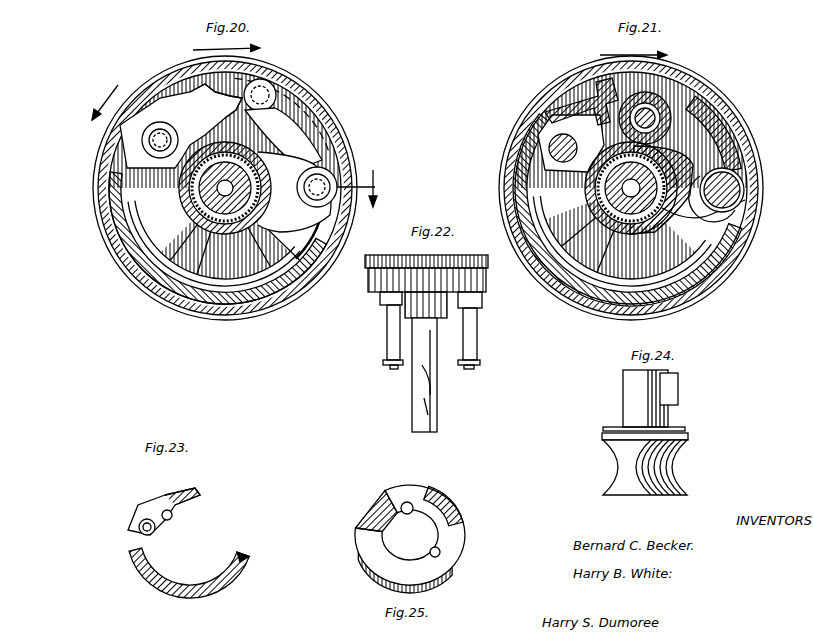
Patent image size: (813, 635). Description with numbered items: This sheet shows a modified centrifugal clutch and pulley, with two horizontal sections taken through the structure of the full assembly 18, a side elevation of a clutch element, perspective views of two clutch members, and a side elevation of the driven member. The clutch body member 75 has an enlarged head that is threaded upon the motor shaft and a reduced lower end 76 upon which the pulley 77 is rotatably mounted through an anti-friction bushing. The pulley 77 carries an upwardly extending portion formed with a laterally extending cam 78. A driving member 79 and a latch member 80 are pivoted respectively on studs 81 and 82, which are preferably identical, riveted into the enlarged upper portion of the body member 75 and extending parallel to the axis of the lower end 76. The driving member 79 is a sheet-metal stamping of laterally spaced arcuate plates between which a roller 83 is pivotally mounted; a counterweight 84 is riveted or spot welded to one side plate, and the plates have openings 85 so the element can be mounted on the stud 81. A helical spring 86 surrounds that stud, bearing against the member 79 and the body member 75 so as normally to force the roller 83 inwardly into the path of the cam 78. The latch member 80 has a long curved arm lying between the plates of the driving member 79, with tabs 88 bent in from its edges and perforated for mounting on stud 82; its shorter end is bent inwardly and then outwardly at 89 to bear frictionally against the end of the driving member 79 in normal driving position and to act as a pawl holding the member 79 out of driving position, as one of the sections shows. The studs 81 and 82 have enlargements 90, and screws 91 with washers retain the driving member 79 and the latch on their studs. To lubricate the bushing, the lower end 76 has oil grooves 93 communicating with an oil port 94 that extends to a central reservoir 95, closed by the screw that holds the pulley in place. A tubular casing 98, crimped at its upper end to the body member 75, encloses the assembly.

In FIG. 20, the section line reference 18 is at (237, 146).
In FIG. 22, the clutch body member 75 is at (370, 290).
In FIG. 21, the reduced lower end 76 is at (584, 193).
In FIG. 22, the reduced lower end 76 is at (412, 428).
In FIG. 24, the pulley 77 is at (614, 447).
In FIG. 20, the cam 78 is at (305, 170).
In FIG. 21, the cam 78 is at (687, 157).
In FIG. 24, the cam 78 is at (680, 386).
In FIG. 20, the driving member 79 is at (280, 152).
In FIG. 21, the driving member 79 is at (708, 137).
In FIG. 25, the driving member 79 is at (462, 520).
In FIG. 20, the latch member 80 is at (128, 230).
In FIG. 21, the latch member 80 is at (523, 180).
In FIG. 23, the latch member 80 is at (132, 570).
In FIG. 21, the stud 81 is at (740, 187).
In FIG. 22, the stud 81 is at (480, 347).
In FIG. 21, the stud 82 is at (558, 140).
In FIG. 22, the stud 82 is at (388, 347).
In FIG. 20, the roller 83 is at (275, 90).
In FIG. 21, the roller 83 is at (660, 100).
In FIG. 25, the roller 83 is at (428, 500).
In FIG. 25, the counterweight 84 is at (360, 529).
In FIG. 25, the openings 85 is at (446, 554).
In FIG. 20, the helical spring 86 is at (282, 284).
In FIG. 21, the helical spring 86 is at (680, 210).
In FIG. 20, the tabs 88 is at (132, 170).
In FIG. 21, the tabs 88 is at (548, 158).
In FIG. 23, the tabs 88 is at (176, 520).
In FIG. 20, the bent end 89 is at (203, 85).
In FIG. 21, the bent end 89 is at (600, 100).
In FIG. 23, the bent end 89 is at (180, 494).
In FIG. 22, the enlargements 90 is at (388, 300).
In FIG. 20, the screws 91 is at (157, 136).
In FIG. 20, the oil grooves 93 is at (180, 284).
In FIG. 21, the oil grooves 93 is at (600, 270).
In FIG. 22, the oil grooves 93 is at (425, 400).
In FIG. 22, the oil port 94 is at (424, 372).
In FIG. 20, the central reservoir 95 is at (150, 250).
In FIG. 21, the central reservoir 95 is at (565, 240).
In FIG. 20, the tubular casing 98 is at (337, 167).
In FIG. 21, the tubular casing 98 is at (705, 280).